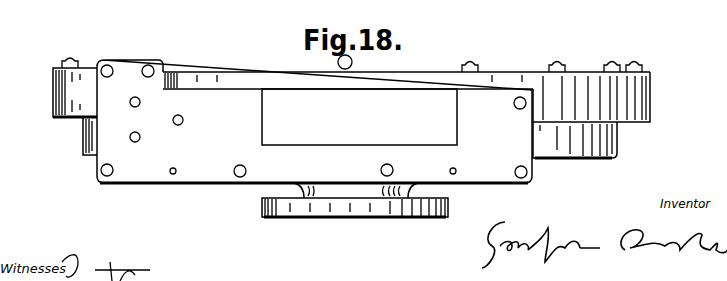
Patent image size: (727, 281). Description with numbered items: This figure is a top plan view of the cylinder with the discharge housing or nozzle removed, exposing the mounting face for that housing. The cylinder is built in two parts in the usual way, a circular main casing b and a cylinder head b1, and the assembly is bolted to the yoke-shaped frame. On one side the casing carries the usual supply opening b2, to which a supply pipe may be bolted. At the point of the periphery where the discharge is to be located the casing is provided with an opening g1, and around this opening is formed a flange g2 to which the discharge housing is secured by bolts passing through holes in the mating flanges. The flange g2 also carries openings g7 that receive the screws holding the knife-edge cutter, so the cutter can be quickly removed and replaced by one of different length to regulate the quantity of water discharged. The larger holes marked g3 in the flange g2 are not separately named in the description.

The main casing b is at (587, 145).
The cylinder head b1 is at (577, 82).
The supply opening b2 is at (355, 218).
The opening g1 is at (359, 117).
The flange g2 is at (165, 62).
The holes g3 is at (519, 178).
The openings g7 is at (138, 106).